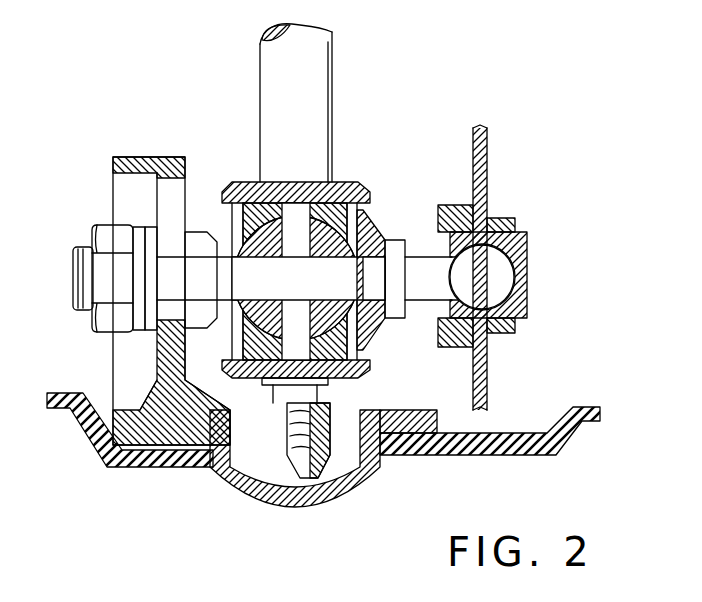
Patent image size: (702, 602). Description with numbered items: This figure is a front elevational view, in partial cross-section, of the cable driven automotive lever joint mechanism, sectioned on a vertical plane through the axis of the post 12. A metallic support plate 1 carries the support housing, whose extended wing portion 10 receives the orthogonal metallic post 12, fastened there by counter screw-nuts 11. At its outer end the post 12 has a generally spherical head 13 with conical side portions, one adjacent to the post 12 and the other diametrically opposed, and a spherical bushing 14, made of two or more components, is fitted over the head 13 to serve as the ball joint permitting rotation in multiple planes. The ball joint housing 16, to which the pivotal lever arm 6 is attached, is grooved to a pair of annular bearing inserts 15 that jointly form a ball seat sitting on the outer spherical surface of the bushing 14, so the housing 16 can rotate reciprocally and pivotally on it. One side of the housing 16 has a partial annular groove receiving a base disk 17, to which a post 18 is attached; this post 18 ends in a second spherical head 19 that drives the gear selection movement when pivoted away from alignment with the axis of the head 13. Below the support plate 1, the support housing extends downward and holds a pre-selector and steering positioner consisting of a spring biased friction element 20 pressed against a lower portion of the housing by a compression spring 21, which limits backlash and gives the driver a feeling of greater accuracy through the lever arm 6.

The support plate 1 is at (557, 430).
The lever arm 6 is at (326, 64).
The extended wing portion 10 is at (147, 157).
The counter screw-nuts 11 is at (97, 237).
The post 12 is at (230, 258).
The spherical head 13 is at (298, 242).
The spherical bushing 14 is at (340, 230).
The annular bearing inserts 15 is at (355, 345).
The ball joint housing 16 is at (250, 387).
The base disk 17 is at (367, 233).
The post 18 is at (420, 285).
The second spherical head 19 is at (500, 268).
The spring biased friction element 20 is at (523, 300).
The compression spring 21 is at (318, 460).